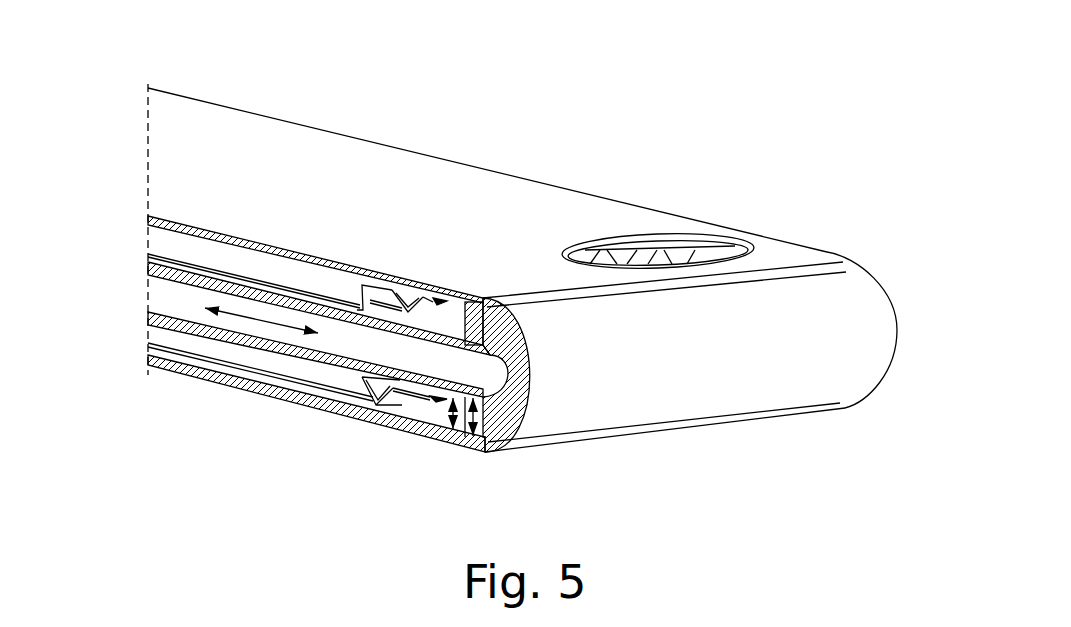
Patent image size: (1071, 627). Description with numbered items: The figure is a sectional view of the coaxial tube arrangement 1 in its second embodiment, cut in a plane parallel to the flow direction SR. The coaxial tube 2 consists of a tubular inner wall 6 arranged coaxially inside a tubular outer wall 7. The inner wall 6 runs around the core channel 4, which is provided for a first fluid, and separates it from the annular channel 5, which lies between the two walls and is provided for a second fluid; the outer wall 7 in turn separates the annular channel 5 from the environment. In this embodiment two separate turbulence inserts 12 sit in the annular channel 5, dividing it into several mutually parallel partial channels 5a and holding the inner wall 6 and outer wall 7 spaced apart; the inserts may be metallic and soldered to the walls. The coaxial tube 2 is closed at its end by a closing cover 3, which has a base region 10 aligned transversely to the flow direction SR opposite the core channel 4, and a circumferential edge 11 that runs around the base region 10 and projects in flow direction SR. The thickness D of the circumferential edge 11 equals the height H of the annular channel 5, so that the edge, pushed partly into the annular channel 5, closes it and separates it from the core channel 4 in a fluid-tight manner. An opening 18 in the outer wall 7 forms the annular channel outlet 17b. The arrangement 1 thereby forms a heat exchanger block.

The coaxial tube arrangement 1 is at (678, 124).
The coaxial tube 2 is at (448, 152).
The closing cover 3 is at (901, 327).
The core channel 4 is at (172, 300).
The annular channel 5 is at (444, 314).
The partial channels 5a is at (410, 302).
The inner wall 6 is at (148, 270).
The outer wall 7 is at (163, 145).
The base region 10 is at (577, 404).
The circumferential edge 11 is at (521, 413).
The turbulence insert 12 is at (265, 258).
The annular channel outlet 17b is at (669, 232).
The opening 18 is at (708, 258).
The flow direction SR is at (232, 320).
The height of the annular channel H is at (450, 432).
The thickness of the circumferential edge D is at (477, 418).